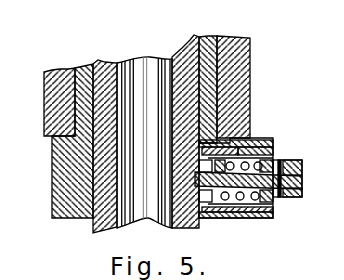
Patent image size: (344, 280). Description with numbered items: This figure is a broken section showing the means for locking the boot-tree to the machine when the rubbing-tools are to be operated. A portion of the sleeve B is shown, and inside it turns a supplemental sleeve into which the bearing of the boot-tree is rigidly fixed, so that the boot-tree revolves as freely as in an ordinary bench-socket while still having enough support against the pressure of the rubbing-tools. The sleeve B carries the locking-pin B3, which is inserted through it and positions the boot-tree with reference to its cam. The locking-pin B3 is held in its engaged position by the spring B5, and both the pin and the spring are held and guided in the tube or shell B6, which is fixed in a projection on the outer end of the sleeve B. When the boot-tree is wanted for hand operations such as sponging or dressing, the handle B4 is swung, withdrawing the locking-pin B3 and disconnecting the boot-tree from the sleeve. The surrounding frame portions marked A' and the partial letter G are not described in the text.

The frame / casing A' is at (145, 131).
The sleeve B is at (217, 36).
The locking-pin B3 is at (212, 218).
The handle B4 is at (302, 162).
The spring B5 is at (272, 207).
The tube or shell B6 is at (272, 153).
The gear (partial) G is at (329, 229).